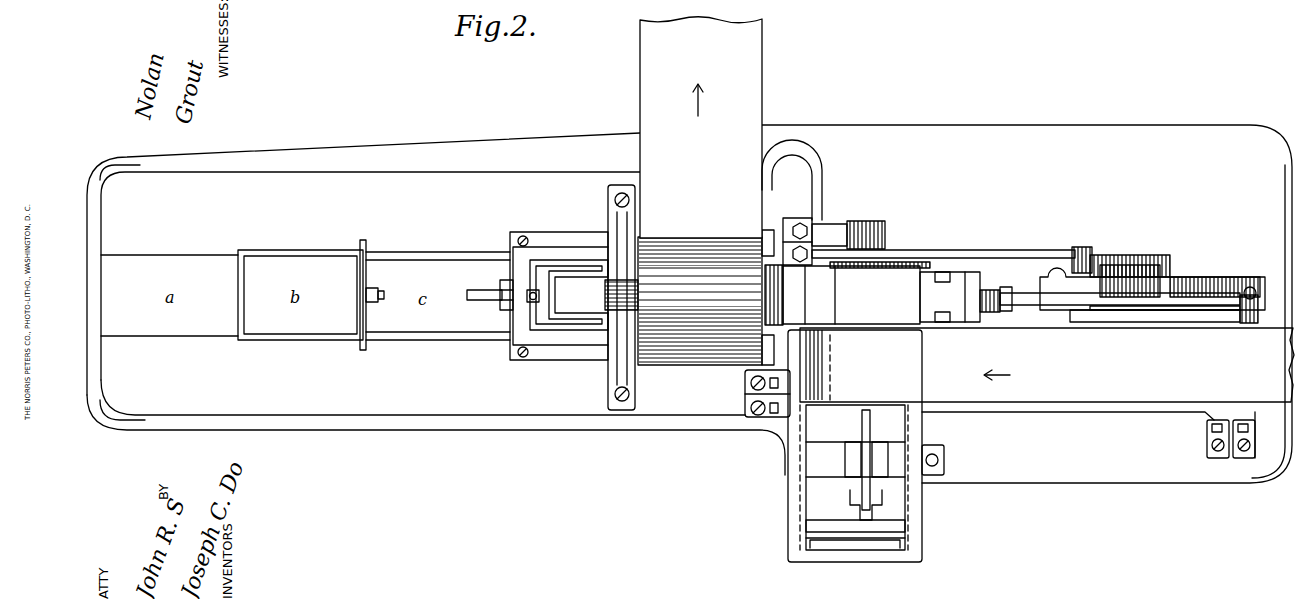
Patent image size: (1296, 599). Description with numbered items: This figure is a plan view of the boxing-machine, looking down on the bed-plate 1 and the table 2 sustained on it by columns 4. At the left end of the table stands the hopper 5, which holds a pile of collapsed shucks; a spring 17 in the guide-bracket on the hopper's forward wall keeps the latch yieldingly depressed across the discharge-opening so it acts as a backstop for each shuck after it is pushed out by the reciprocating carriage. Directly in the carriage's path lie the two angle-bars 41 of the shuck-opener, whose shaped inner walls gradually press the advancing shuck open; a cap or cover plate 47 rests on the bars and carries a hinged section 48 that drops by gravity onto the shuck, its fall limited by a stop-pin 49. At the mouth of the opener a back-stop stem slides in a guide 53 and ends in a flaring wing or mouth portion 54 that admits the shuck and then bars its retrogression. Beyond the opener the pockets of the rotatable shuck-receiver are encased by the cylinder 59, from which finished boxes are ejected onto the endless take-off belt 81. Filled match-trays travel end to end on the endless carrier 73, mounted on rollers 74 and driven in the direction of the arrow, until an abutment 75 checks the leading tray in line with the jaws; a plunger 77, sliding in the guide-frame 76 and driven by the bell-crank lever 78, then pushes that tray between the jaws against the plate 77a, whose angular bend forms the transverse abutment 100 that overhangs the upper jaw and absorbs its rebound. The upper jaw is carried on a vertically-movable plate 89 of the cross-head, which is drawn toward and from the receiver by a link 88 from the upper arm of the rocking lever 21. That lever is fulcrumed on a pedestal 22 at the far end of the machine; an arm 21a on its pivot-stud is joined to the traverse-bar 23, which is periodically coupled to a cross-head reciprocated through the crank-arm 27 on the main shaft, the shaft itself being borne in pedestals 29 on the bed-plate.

The bed-plate 1 is at (400, 146).
The table 2 is at (657, 296).
The columns 4 is at (1208, 421).
The hopper 5 is at (300, 250).
The spring 17 is at (382, 292).
The rocking lever 21 is at (1188, 318).
The arm 21a is at (1118, 265).
The pedestal 22 is at (1198, 278).
The traverse-bar 23 is at (1008, 252).
The crank-arm 27 is at (826, 222).
The pedestals 29 is at (894, 448).
The angle-bars 41 is at (560, 242).
The cap or cover plate 47 is at (569, 294).
The hinged section 48 is at (564, 296).
The stop-pin 49 is at (538, 300).
The guide 53 is at (502, 287).
The wing or mouth portion 54 is at (480, 300).
The cylinder 59 is at (696, 238).
The endless carrier 73 is at (1047, 365).
The rollers 74 is at (832, 373).
The abutment 75 is at (792, 393).
The guide-frame 76 is at (788, 523).
The plunger 77 is at (905, 519).
The plate 77a is at (915, 262).
The bell-crank lever 78 is at (860, 428).
The take-off belt 81 is at (701, 127).
The link 88 is at (1023, 293).
The vertically-movable plate 89 is at (960, 297).
The transverse abutment 100 is at (818, 291).